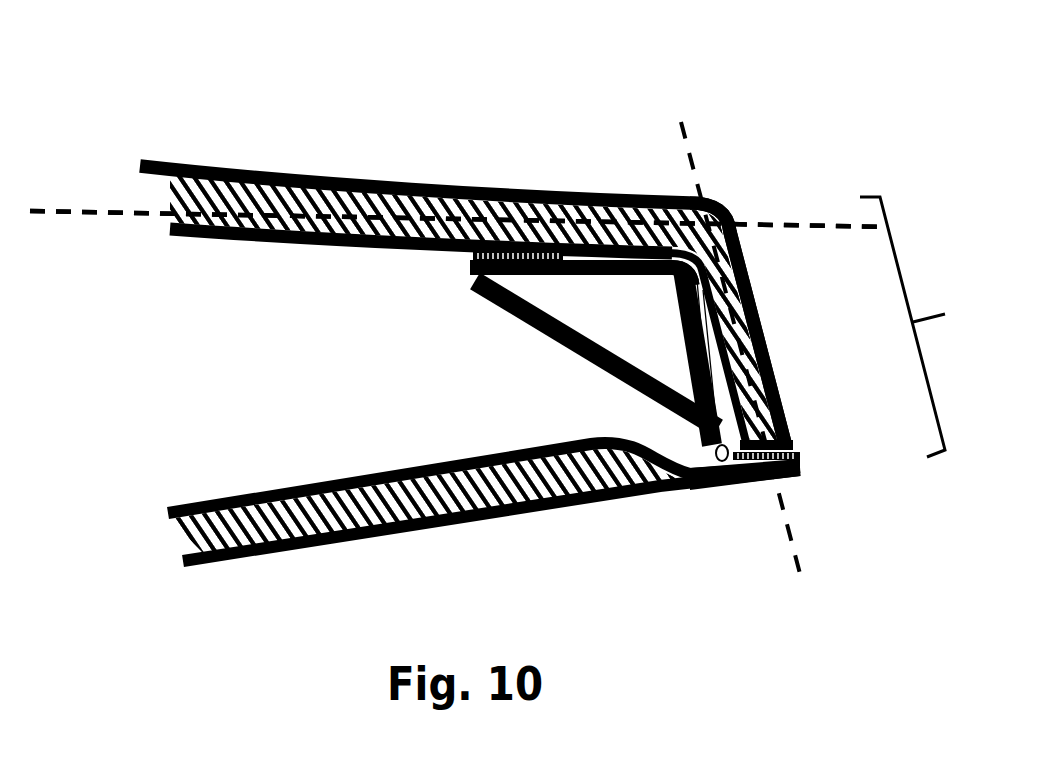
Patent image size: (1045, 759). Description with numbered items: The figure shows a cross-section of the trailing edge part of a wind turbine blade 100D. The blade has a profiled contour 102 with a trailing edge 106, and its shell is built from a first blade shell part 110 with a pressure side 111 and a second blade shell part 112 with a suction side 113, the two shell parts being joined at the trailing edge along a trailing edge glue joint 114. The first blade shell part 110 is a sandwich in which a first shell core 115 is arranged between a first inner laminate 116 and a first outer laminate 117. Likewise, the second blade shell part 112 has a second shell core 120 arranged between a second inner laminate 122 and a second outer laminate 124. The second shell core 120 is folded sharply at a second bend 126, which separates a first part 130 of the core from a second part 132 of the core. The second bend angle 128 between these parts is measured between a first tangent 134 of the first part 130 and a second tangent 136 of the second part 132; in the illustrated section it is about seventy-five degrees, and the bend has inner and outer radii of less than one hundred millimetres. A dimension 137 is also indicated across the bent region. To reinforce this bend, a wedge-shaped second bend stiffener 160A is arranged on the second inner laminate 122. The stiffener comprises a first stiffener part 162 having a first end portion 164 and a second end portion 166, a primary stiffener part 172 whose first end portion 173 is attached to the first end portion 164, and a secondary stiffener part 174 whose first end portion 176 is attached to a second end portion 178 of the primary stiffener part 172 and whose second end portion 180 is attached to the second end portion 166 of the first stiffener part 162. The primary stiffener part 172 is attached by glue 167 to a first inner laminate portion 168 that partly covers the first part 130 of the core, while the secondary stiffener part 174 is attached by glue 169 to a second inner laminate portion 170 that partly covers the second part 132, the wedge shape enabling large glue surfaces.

The wind turbine blade 100D is at (422, 64).
The profiled contour 102 is at (644, 178).
The trailing edge 106 is at (783, 387).
The first blade shell part 110 is at (530, 508).
The pressure side 111 is at (427, 530).
The second blade shell part 112 is at (296, 186).
The suction side 113 is at (430, 180).
The trailing edge glue joint 114 is at (800, 457).
The first shell core 115 is at (170, 519).
The first inner laminate 116 is at (280, 487).
The first outer laminate 117 is at (262, 555).
The second shell core 120 is at (171, 197).
The second inner laminate 122 is at (324, 246).
The second outer laminate 124 is at (208, 160).
The second bend 126 is at (723, 196).
The second bend angle 128 is at (772, 229).
The first part of the second shell core 130 is at (527, 192).
The second part of the second shell core 132 is at (773, 357).
The first tangent 134 is at (846, 224).
The second tangent 136 is at (678, 104).
The height of end wall 137 is at (937, 317).
The second bend stiffener 160A is at (528, 306).
The first stiffener part 162 is at (573, 343).
The first end portion of the first stiffener part 164 is at (482, 283).
The second end portion of the first stiffener part 166 is at (622, 431).
The glue 167 is at (472, 255).
The first inner laminate portion 168 is at (547, 182).
The glue 169 is at (730, 483).
The second inner laminate portion 170 is at (783, 410).
The primary stiffener part 172 is at (627, 277).
The first end portion of the primary stiffener part 173 is at (472, 260).
The secondary stiffener part 174 is at (697, 345).
The first end portion of the secondary stiffener part 176 is at (650, 357).
The second end portion of the primary stiffener part 178 is at (673, 280).
The second end portion of the secondary stiffener part 180 is at (700, 447).